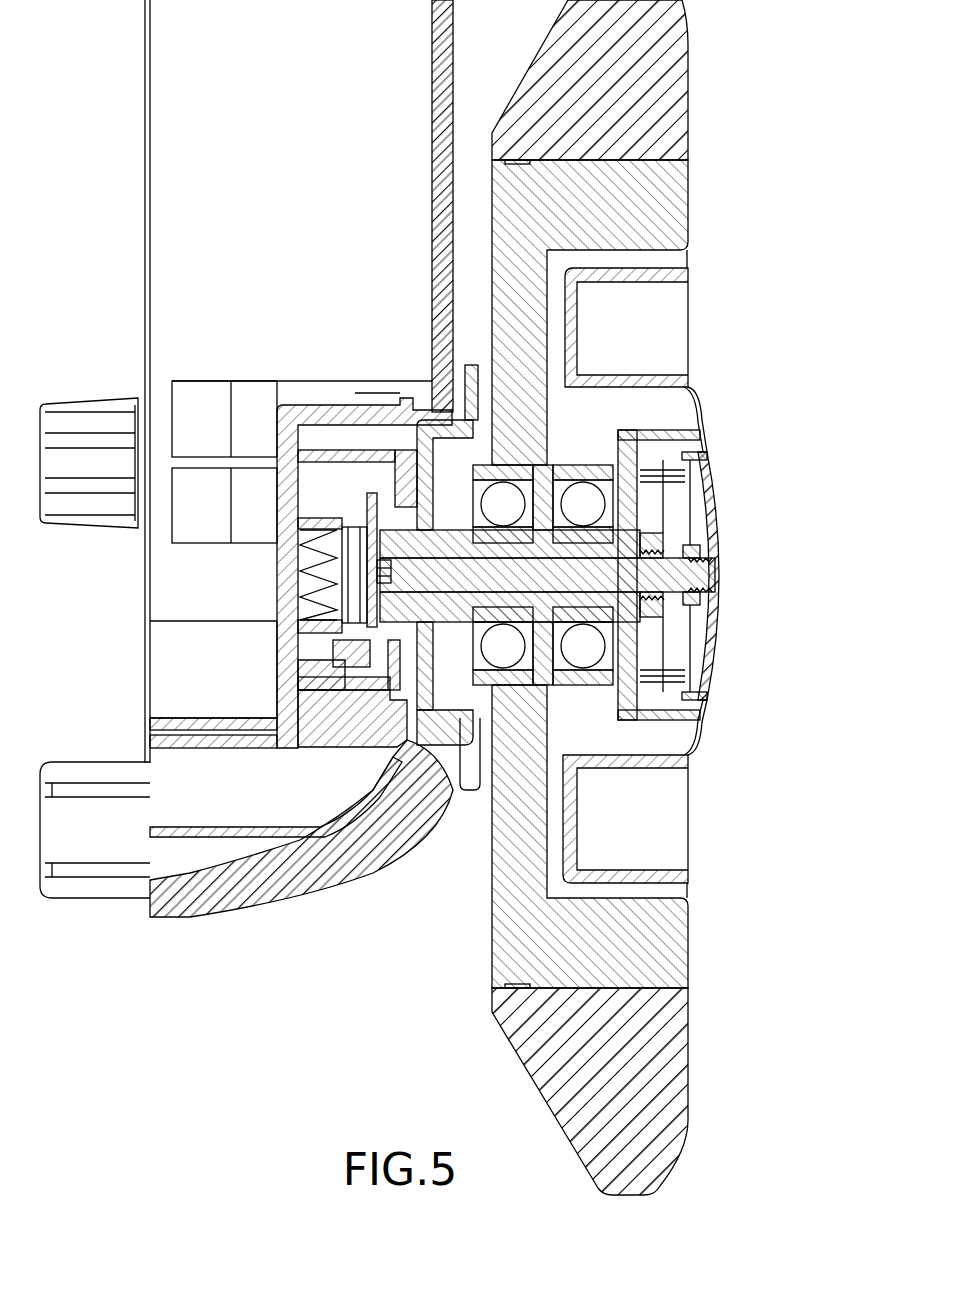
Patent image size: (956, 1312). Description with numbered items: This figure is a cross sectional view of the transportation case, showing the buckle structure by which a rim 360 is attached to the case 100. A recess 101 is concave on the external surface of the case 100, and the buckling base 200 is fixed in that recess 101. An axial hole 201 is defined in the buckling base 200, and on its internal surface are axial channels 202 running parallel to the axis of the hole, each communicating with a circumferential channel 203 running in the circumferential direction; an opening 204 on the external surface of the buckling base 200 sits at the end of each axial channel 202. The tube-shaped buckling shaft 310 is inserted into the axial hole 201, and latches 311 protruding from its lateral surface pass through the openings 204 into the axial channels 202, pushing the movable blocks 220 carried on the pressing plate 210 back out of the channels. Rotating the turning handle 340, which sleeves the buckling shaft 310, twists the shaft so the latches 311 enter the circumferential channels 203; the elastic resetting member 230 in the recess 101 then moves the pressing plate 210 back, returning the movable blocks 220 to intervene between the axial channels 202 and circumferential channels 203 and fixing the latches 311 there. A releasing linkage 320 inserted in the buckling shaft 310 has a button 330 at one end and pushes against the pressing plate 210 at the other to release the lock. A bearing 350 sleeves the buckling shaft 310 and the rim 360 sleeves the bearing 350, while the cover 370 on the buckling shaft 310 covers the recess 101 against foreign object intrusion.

The case 100 is at (267, 905).
The recess 101 is at (412, 412).
The buckling base 200 is at (398, 444).
The axial hole 201 is at (333, 505).
The axial channel 202 is at (365, 662).
The circumferential channel 203 is at (300, 468).
The opening 204 is at (457, 742).
The pressing plate 210 is at (322, 634).
The movable block 220 is at (300, 679).
The elastic resetting member 230 is at (320, 570).
The buckling shaft 310 is at (538, 548).
The latch 311 is at (343, 494).
The releasing linkage 320 is at (712, 580).
The button 330 is at (720, 517).
The turning handle 340 is at (663, 825).
The bearing 350 is at (622, 645).
The rim 360 is at (663, 943).
The cover 370 is at (470, 775).